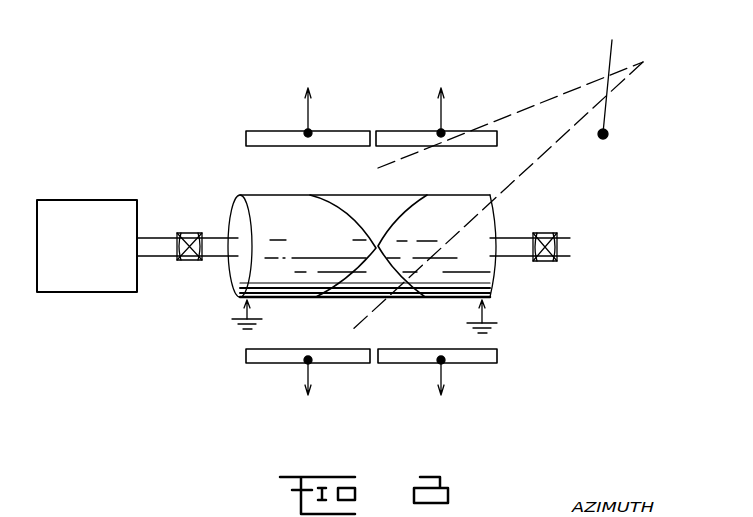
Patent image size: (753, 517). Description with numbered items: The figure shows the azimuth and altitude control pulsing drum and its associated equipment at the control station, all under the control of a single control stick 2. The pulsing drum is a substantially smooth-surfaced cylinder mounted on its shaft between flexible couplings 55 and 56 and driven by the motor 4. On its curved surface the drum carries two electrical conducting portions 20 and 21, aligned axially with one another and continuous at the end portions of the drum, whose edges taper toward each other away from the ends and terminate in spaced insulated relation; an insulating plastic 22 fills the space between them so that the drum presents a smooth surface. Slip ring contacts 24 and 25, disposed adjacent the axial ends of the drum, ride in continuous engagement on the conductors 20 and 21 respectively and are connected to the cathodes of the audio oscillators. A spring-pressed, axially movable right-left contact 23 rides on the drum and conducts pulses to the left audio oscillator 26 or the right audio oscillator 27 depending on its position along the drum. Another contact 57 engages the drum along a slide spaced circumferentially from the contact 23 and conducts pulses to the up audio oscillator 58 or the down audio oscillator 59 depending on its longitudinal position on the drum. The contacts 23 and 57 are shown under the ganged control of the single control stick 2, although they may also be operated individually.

The motor 4 is at (88, 293).
The flexible coupling 55 is at (190, 261).
The electrical conducting portion 20 is at (285, 299).
The electrical conducting portion 21 is at (446, 299).
The plastic insulation material 22 is at (350, 196).
The spring-pressed axially movable contact 23 is at (391, 148).
The slip ring contact 24 is at (243, 318).
The slip ring contact 25 is at (486, 322).
The left audio oscillator 26 is at (310, 120).
The right audio oscillator 27 is at (443, 120).
The flexible coupling 56 is at (545, 262).
The contact 57 is at (358, 300).
The up audio oscillator 58 is at (310, 373).
The down audio oscillator 59 is at (443, 373).
The control stick 2 is at (607, 100).